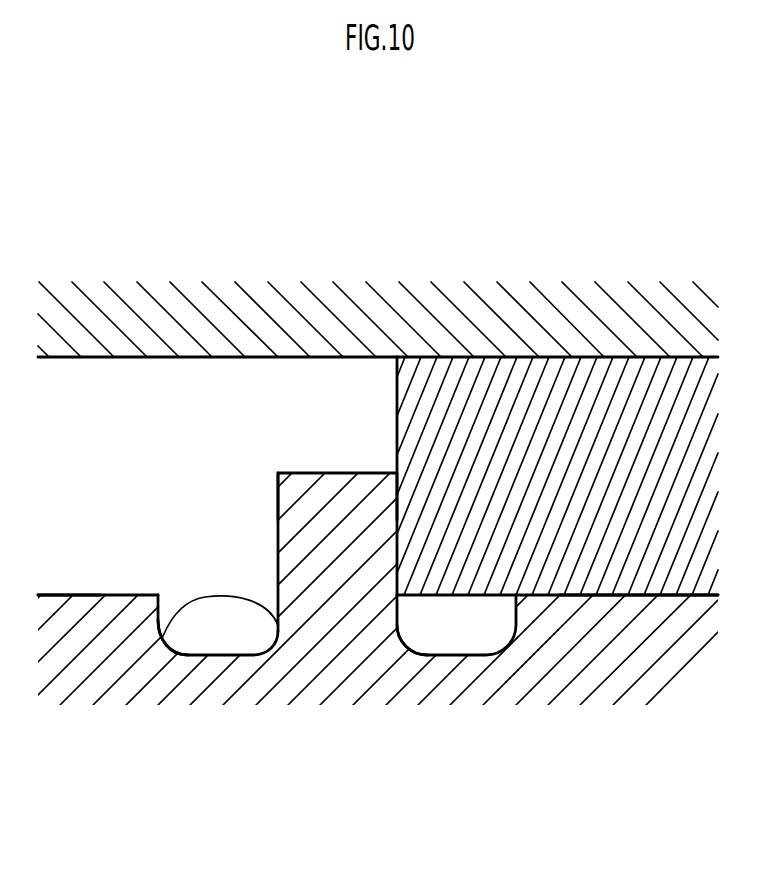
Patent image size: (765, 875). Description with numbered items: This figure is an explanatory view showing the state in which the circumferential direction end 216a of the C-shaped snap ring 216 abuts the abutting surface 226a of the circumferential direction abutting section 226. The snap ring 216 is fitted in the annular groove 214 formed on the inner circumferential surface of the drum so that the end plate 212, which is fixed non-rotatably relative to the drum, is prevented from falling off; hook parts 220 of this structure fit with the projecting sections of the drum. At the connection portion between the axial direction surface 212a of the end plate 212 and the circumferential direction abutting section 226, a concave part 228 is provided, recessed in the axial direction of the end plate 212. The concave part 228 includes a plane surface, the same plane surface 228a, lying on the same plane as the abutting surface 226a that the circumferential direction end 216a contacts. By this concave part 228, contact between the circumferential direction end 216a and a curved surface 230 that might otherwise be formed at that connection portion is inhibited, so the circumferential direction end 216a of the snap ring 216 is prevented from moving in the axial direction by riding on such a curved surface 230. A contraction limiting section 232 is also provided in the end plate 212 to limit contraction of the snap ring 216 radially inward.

The end plate 212 is at (192, 685).
The axial direction surface 212a is at (52, 595).
The annular groove 214 is at (193, 357).
The snap ring 216 is at (512, 417).
The circumferential direction end 216a is at (396, 405).
The hook part 220 is at (255, 318).
The circumferential direction abutting section 226 is at (333, 473).
The abutting surface 226a is at (270, 503).
The concave part 228 is at (461, 620).
The same plane surface 228a is at (167, 618).
The curved surface 230 is at (395, 620).
The contraction limiting section 232 is at (82, 518).